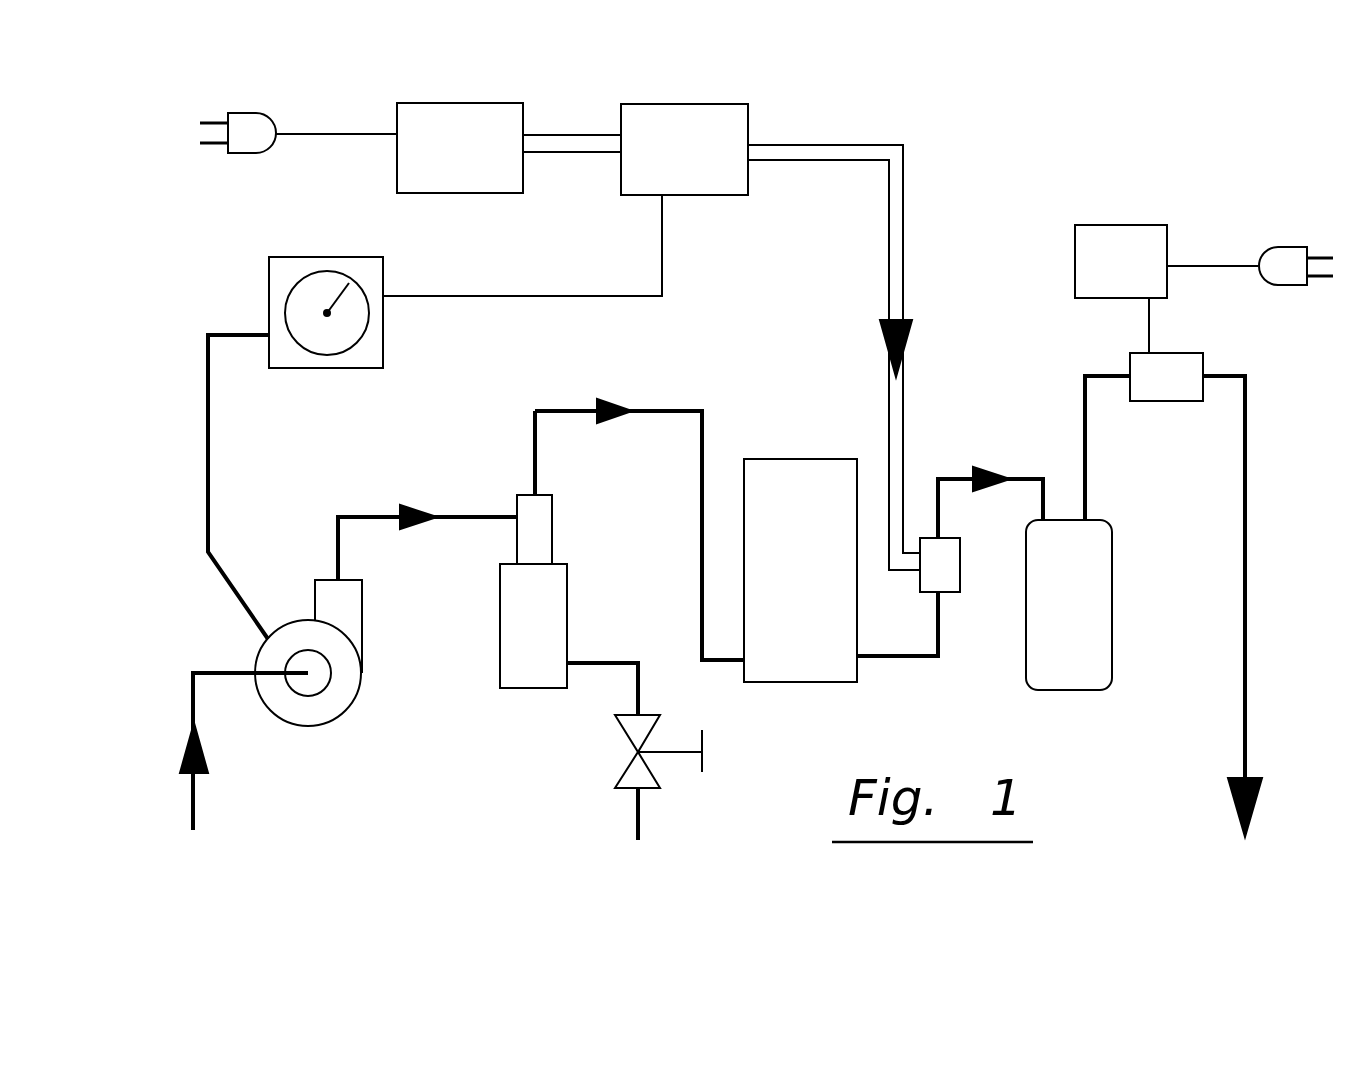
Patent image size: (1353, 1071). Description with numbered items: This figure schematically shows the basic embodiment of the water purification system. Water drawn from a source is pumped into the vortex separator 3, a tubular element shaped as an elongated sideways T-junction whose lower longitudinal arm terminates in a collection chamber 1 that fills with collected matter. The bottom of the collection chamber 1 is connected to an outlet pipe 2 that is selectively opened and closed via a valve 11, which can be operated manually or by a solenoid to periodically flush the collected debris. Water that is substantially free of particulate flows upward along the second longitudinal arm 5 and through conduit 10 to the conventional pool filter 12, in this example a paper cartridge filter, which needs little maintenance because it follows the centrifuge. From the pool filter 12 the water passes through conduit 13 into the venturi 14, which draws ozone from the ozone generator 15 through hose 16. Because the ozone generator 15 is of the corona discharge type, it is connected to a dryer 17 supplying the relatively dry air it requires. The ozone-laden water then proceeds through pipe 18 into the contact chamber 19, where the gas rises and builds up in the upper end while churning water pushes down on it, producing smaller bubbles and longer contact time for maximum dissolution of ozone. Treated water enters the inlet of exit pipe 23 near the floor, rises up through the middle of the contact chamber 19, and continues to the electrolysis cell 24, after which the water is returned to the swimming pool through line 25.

The collection chamber 1 is at (563, 587).
The outlet pipe 2 is at (640, 678).
The vortex separator 3 is at (552, 520).
The second longitudinal arm 5 is at (533, 460).
The conduit 10 is at (563, 408).
The drain valve 11 is at (630, 767).
The pool filter 12 is at (813, 458).
The conduit 13 is at (902, 662).
The venturi 14 is at (950, 587).
The ozone generator 15 is at (673, 106).
The hose 16 is at (900, 242).
The dryer 17 is at (473, 104).
The pipe 18 is at (1030, 477).
The contact chamber 19 is at (1093, 607).
The exit pipe 23 is at (1090, 373).
The electrolysis cell 24 is at (1192, 355).
The line 25 is at (1243, 502).